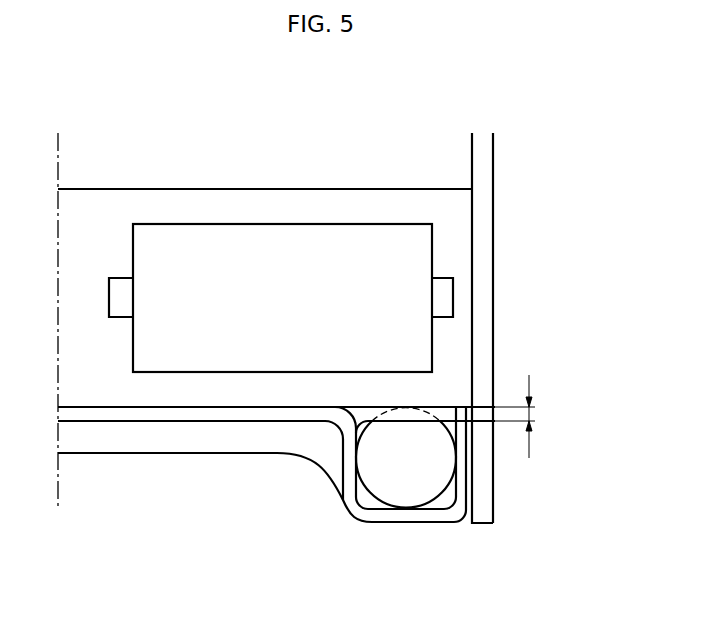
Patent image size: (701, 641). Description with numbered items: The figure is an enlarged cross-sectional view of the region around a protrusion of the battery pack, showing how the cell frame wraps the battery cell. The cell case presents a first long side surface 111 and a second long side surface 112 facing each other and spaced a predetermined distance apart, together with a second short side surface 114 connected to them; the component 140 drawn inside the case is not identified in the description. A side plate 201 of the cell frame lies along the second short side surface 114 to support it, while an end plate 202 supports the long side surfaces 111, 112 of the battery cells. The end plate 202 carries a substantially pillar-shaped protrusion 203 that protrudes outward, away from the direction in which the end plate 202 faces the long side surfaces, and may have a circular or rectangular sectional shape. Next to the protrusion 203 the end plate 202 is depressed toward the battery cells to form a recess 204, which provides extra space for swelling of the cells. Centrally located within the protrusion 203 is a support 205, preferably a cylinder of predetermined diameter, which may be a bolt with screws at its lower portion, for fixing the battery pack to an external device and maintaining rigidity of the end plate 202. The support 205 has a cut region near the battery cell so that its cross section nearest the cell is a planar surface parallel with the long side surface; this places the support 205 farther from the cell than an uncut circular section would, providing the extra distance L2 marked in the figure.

The second long side surface 112 is at (168, 188).
The battery module 140 is at (310, 240).
The side plate 201 is at (477, 247).
The second short side surface 114 is at (472, 328).
The first long side surface 111 is at (112, 407).
The recess 204 is at (216, 438).
The protrusion 203 is at (393, 515).
The end plate 202 is at (430, 522).
The support 205 is at (380, 483).
The extra distance L2 is at (530, 416).